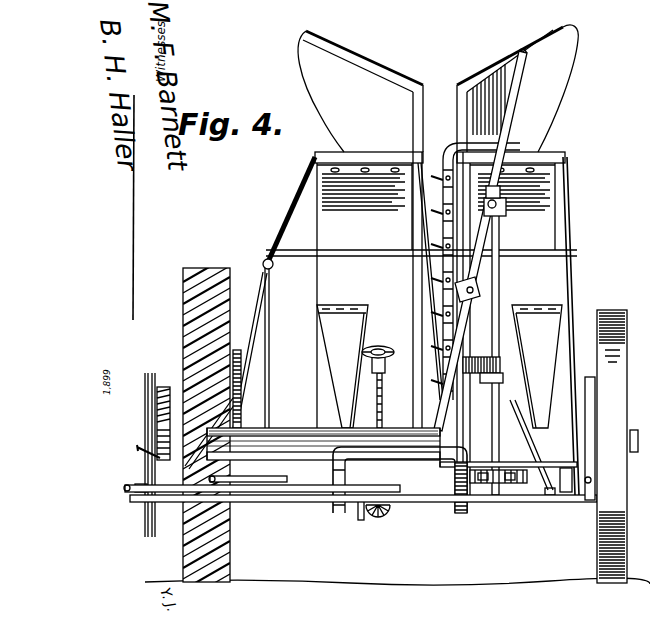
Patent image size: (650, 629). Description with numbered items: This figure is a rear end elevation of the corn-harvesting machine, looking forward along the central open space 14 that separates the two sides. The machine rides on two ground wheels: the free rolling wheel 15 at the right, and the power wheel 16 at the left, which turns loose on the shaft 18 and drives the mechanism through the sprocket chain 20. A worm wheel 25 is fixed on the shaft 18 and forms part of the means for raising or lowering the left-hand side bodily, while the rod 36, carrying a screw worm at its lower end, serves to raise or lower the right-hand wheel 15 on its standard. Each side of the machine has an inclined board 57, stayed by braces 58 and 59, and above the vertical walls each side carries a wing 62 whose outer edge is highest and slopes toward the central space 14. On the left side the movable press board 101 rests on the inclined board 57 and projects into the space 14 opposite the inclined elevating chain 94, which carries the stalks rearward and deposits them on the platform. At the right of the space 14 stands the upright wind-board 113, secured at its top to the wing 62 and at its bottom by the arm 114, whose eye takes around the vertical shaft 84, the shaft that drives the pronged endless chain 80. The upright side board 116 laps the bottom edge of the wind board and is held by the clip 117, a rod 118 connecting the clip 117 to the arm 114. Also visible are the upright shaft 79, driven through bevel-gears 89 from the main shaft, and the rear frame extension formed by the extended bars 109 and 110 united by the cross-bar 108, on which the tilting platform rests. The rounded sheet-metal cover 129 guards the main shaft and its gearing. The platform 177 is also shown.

The central open space 14 is at (459, 128).
The free rolling wheel 15 is at (597, 534).
The power wheel 16 is at (205, 275).
The shaft 18 is at (165, 386).
The sprocket chain 20 is at (246, 361).
The worm wheel 25 is at (590, 395).
The rod 36 is at (592, 480).
The inclined board 57 is at (330, 232).
The brace 58 is at (297, 197).
The brace 59 is at (340, 331).
The wing 62 is at (379, 66).
The upright shaft 79 is at (387, 396).
The endless chain 80 is at (499, 485).
The vertical shaft 84 is at (498, 278).
The bevel-gears 89 is at (380, 518).
The inclined elevating chain 94 is at (464, 146).
The movable press board 101 is at (432, 335).
The cross-bar 108 is at (411, 458).
The left-hand extended bar 109 is at (331, 503).
The right-hand extended bar 110 is at (454, 500).
The wind-board 113 is at (505, 107).
The arm 114 is at (492, 365).
The upright side board 116 is at (478, 282).
The clip 117 is at (478, 290).
The rod 118 is at (503, 378).
The sheet-metal cover 129 is at (566, 486).
The platform 177 is at (293, 428).